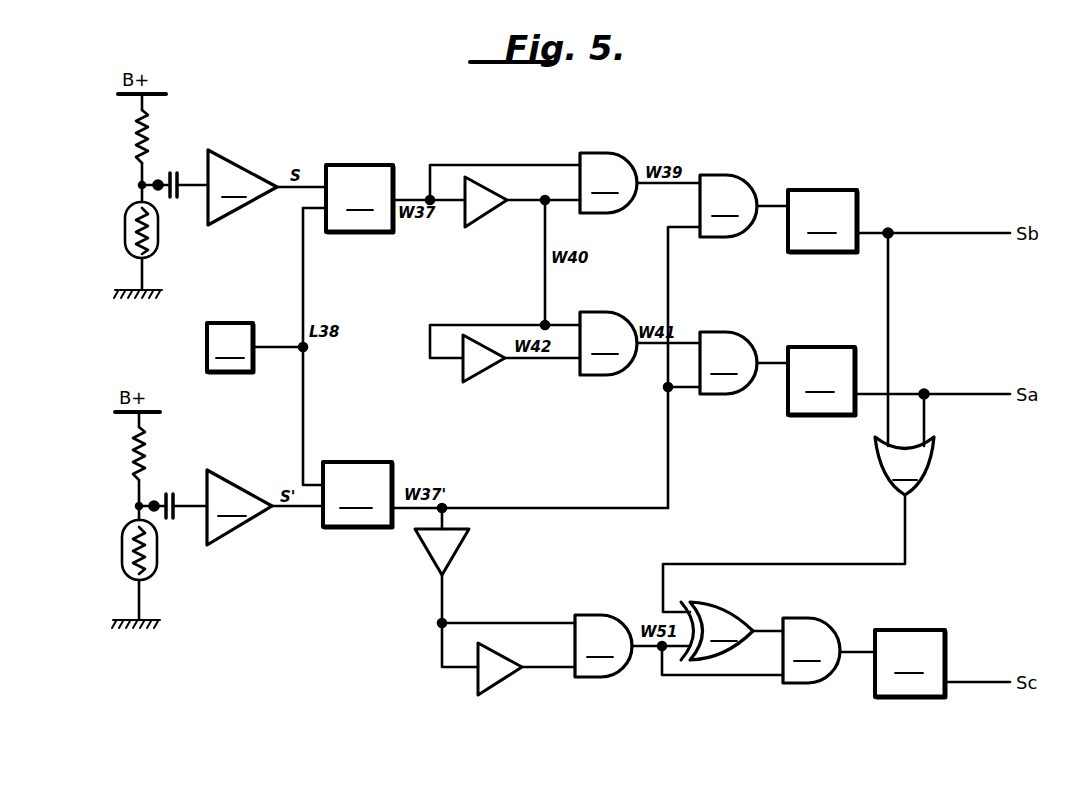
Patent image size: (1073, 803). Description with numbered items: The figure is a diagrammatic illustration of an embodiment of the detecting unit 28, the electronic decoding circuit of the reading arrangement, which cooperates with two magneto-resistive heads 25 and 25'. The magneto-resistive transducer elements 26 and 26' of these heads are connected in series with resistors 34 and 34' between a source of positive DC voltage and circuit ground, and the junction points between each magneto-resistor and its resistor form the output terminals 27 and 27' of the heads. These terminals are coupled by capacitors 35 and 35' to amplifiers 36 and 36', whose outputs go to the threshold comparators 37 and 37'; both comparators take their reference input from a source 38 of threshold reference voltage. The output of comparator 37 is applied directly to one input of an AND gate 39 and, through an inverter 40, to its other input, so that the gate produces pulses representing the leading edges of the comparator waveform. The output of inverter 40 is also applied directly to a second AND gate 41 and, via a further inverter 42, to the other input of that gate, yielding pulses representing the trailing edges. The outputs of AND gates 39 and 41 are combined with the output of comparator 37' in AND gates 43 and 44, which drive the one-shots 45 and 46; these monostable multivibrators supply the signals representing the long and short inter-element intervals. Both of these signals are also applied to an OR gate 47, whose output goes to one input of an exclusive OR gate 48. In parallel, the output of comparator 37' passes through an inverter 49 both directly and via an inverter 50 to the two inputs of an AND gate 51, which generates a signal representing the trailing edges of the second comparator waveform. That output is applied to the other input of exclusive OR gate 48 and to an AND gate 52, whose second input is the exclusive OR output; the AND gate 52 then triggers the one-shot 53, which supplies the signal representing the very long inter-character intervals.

The magneto-resistive head 25 is at (157, 270).
The magneto-resistive transducer element 26 is at (120, 237).
The output terminal 27 is at (163, 160).
The detecting unit 28 is at (800, 108).
The resistor 34 is at (115, 136).
The capacitor 35 is at (189, 208).
The amplifier 36 is at (246, 181).
The threshold comparator 37 is at (373, 181).
The threshold reference voltage source 38 is at (275, 316).
The AND gate 39 is at (608, 183).
The inverter 40 is at (485, 206).
The second AND gate 41 is at (608, 343).
The inverter 42 is at (483, 365).
The AND gate 43 is at (728, 206).
The AND gate 44 is at (728, 363).
The monostable multivibrator 45 is at (880, 176).
The monostable multivibrator 46 is at (838, 330).
The OR gate 47 is at (904, 364).
The exclusive OR gate 48 is at (717, 631).
The inverter 49 is at (437, 552).
The inverter 50 is at (494, 680).
The AND gate 51 is at (603, 646).
The AND gate 52 is at (811, 650).
The monostable multivibrator 53 is at (972, 617).
The magneto-resistive head 25' is at (158, 601).
The magneto-resistive transducer element 26' is at (120, 559).
The output terminal 27' is at (165, 482).
The resistor 34' is at (116, 458).
The capacitor 35' is at (186, 534).
The amplifier 36' is at (241, 503).
The threshold comparator 37' is at (371, 480).